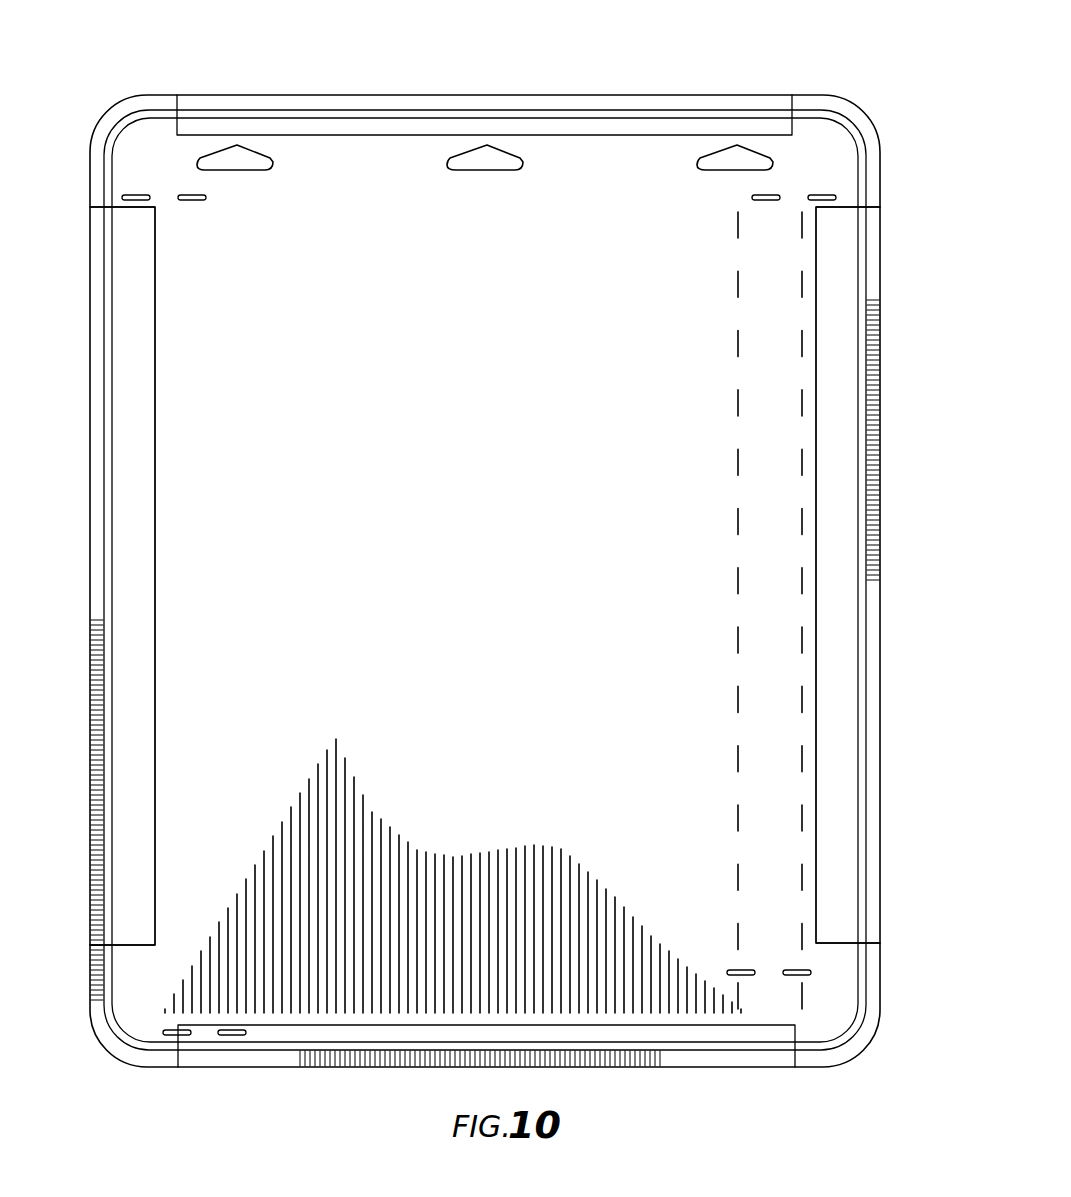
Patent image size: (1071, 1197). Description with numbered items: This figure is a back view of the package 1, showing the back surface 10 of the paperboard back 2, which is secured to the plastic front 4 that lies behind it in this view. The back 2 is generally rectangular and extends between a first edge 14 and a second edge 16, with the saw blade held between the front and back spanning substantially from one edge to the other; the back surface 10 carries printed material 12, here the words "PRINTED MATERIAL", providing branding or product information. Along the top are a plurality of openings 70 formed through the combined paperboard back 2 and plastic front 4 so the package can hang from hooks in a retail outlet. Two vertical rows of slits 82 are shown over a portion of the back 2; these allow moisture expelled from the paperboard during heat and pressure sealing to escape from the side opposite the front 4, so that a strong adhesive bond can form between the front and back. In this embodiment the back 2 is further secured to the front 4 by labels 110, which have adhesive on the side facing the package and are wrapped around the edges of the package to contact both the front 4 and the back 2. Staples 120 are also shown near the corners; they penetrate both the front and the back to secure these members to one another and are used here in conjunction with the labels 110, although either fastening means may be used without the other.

The package 1 is at (885, 115).
The paperboard back 2 is at (608, 167).
The plastic front 4 is at (762, 103).
The back surface 10 is at (816, 428).
The printed material 12 is at (500, 460).
The first edge 14 is at (108, 572).
The second edge 16 is at (866, 531).
The openings 70 is at (212, 170).
The slits 82 is at (737, 698).
The labels 110 is at (376, 138).
The staples 120 is at (136, 194).